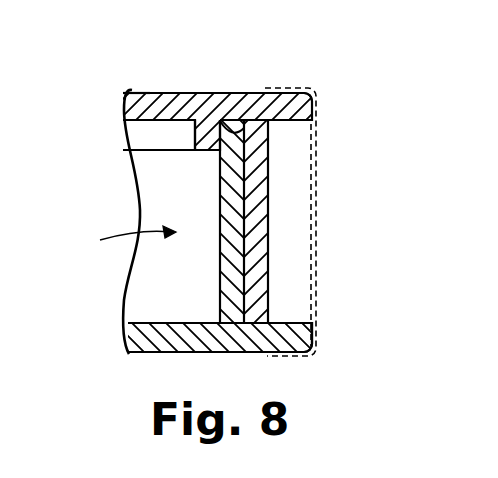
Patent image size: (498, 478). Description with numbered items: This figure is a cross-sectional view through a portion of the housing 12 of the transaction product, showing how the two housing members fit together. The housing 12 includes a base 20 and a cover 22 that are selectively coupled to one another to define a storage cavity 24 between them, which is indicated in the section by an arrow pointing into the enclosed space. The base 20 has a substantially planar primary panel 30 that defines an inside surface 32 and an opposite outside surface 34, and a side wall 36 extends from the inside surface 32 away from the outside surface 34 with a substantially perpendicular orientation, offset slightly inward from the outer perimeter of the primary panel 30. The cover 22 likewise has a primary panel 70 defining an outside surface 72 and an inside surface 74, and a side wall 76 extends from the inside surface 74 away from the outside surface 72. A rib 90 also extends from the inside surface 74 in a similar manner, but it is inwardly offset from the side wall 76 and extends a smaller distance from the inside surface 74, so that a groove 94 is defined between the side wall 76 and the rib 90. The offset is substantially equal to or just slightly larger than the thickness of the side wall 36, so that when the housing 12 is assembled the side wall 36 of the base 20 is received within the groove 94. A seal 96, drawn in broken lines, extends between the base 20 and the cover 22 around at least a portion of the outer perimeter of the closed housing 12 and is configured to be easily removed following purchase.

The housing 12 is at (113, 92).
The base 20 is at (203, 338).
The cover 22 is at (179, 104).
The storage cavity 24 is at (123, 239).
The primary panel 30 is at (270, 341).
The inside surface 32 is at (147, 322).
The outside surface 34 is at (150, 352).
The side wall 36 is at (252, 219).
The primary panel 70 is at (133, 96).
The outside surface 72 is at (259, 92).
The inside surface 74 is at (143, 131).
The side wall 76 is at (257, 166).
The rib 90 is at (212, 148).
The groove 94 is at (246, 129).
The seal 96 is at (317, 252).